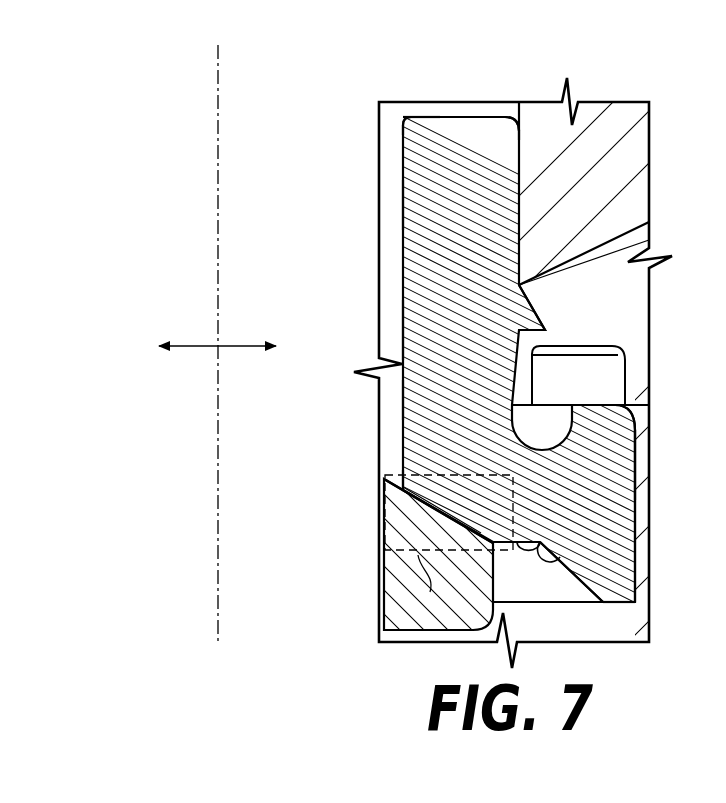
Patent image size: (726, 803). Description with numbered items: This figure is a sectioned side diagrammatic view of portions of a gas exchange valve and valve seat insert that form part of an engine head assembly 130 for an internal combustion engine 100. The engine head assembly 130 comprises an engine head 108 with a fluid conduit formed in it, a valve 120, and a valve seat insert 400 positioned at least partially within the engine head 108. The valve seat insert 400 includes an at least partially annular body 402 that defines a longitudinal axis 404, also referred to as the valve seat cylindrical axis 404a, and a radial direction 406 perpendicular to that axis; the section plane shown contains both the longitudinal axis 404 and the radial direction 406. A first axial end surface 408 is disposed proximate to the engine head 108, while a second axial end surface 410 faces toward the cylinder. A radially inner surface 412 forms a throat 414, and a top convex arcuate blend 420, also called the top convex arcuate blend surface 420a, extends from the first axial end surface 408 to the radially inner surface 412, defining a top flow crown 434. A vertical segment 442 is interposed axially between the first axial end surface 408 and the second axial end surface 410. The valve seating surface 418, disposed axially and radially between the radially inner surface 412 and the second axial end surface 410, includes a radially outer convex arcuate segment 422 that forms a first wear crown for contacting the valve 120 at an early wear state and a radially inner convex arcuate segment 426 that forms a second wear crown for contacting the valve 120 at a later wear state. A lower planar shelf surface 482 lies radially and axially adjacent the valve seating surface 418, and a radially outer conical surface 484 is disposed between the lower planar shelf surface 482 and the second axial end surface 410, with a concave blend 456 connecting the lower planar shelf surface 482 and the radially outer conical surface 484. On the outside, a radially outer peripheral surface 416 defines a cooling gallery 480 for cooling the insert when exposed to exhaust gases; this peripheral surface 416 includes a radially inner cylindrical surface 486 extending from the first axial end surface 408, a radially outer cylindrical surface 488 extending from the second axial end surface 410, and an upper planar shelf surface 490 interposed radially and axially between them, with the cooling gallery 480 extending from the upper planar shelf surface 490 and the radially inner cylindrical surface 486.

The internal combustion engine 100 is at (603, 40).
The engine head assembly 130 is at (645, 86).
The valve seat insert 400 is at (461, 102).
The annular body 402 is at (507, 127).
The first axial end surface 408 is at (428, 116).
The top flow crown 434 is at (406, 108).
The top convex arcuate blend 420 is at (398, 126).
The top convex arcuate blend surface 420a is at (412, 121).
The radially inner cylindrical surface 486 is at (522, 168).
The radially outer peripheral surface 416 is at (535, 235).
The engine head 108 is at (628, 193).
The longitudinal axis 404 is at (678, 409).
The valve seat cylindrical axis 404a is at (216, 243).
The radial direction 406 is at (228, 345).
The throat 414 is at (398, 203).
The radially inner surface 412 is at (398, 330).
The vertical segment 442 is at (401, 397).
The radially inner convex arcuate segment 426 is at (408, 490).
The valve seating surface 418 is at (456, 504).
The radially outer convex arcuate segment 422 is at (482, 521).
The lower planar shelf surface 482 is at (541, 543).
The concave blend 456 is at (561, 551).
The radially outer cylindrical surface 488 is at (638, 497).
The cooling gallery 480 is at (522, 378).
The upper planar shelf surface 490 is at (600, 403).
The valve 120 is at (402, 624).
The radially outer conical surface 484 is at (583, 603).
The second axial end surface 410 is at (619, 604).